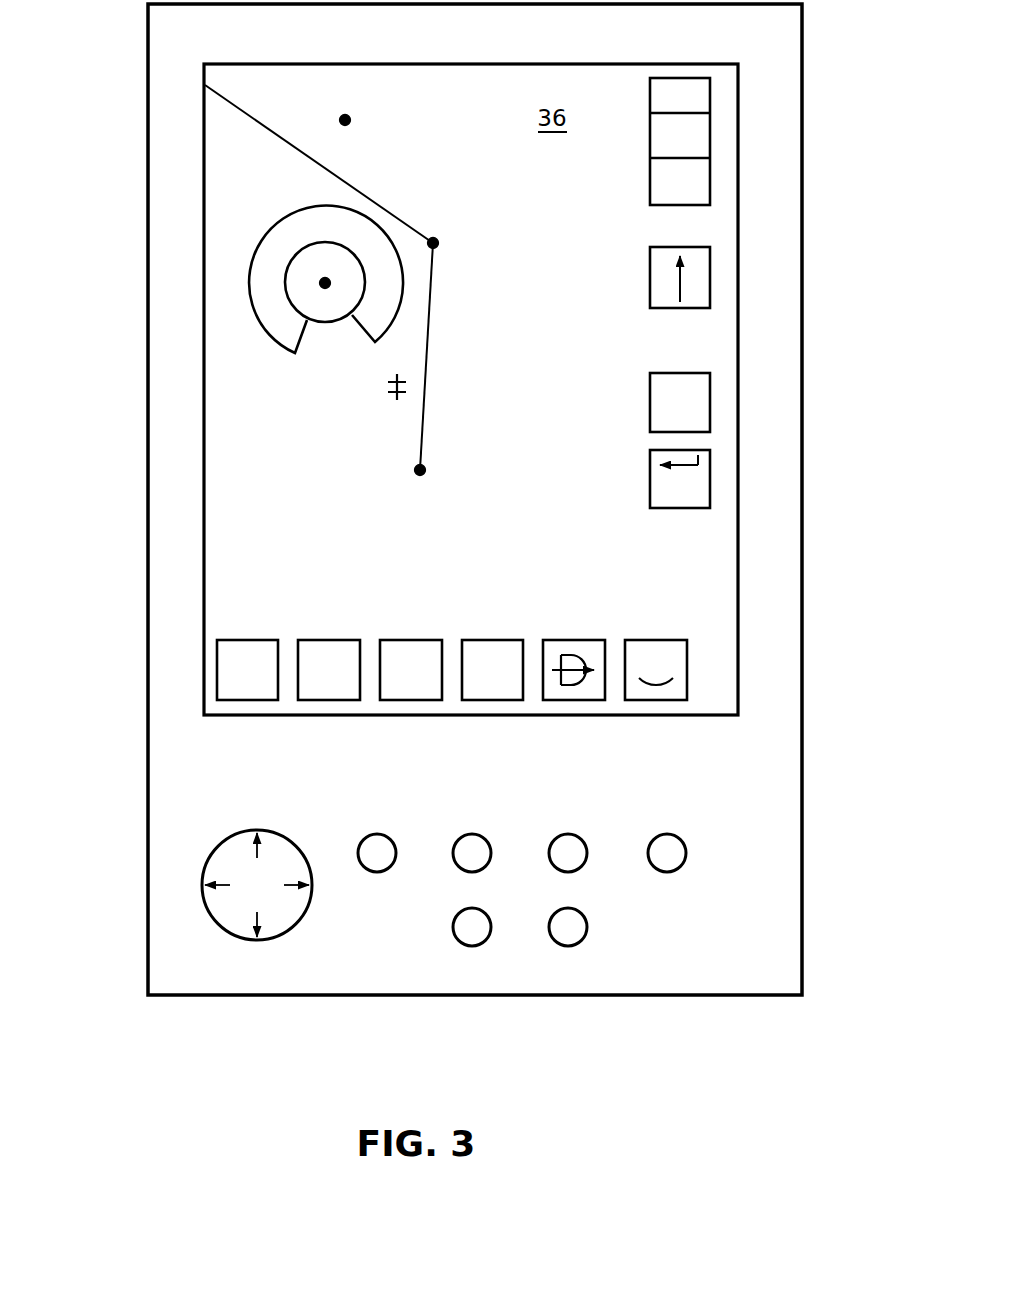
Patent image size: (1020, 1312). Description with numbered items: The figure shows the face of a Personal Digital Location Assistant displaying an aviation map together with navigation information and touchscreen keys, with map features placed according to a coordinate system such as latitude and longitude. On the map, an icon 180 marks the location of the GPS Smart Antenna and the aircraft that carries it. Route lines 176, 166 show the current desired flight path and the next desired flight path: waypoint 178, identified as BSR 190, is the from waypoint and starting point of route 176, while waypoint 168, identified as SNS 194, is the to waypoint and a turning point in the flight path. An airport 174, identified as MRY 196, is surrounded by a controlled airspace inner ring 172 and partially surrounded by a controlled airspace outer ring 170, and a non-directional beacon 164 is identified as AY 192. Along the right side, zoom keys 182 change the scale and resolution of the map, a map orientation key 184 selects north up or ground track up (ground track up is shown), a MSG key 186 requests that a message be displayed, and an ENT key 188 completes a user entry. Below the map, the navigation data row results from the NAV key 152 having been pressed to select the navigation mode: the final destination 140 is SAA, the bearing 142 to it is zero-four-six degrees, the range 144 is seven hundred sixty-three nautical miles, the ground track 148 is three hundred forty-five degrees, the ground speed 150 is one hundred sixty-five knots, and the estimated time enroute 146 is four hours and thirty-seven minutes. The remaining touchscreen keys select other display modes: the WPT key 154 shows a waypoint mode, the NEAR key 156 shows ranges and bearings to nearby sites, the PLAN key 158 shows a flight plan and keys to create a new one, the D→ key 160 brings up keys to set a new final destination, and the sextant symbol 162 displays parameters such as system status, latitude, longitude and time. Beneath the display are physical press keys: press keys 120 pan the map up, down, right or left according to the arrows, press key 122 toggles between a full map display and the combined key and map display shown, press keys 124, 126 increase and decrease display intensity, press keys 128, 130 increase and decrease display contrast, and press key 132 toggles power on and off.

The press keys 120 is at (255, 888).
The press key 122 is at (377, 853).
The press key 124 is at (472, 853).
The press key 126 is at (472, 927).
The press key 128 is at (568, 853).
The press key 130 is at (568, 927).
The press key 132 is at (667, 853).
The final destination 140 is at (210, 552).
The bearing 142 is at (372, 553).
The range 144 is at (492, 542).
The estimated time enroute 146 is at (686, 565).
The ground track 148 is at (472, 605).
The ground speed 150 is at (714, 603).
The NAV key 152 is at (247, 702).
The WPT key 154 is at (329, 702).
The NEAR key 156 is at (411, 702).
The PLAN key 158 is at (492, 702).
The D→ key 160 is at (573, 702).
The sextant symbol key 162 is at (655, 702).
The non-directional beacon 164 is at (334, 118).
The route line 166 is at (325, 172).
The waypoint 168 is at (425, 242).
The controlled airspace outer ring 170 is at (278, 342).
The controlled airspace inner ring 172 is at (292, 312).
The airport 174 is at (318, 283).
The route line 176 is at (422, 421).
The waypoint 178 is at (412, 469).
The icon 180 is at (378, 387).
The zoom keys 182 is at (712, 140).
The map orientation key 184 is at (712, 278).
The MSG key 186 is at (712, 402).
The ENT key 188 is at (712, 487).
The BSR identifier 190 is at (350, 445).
The AY identifier 192 is at (312, 143).
The SNS identifier 194 is at (425, 210).
The MRY identifier 196 is at (290, 262).